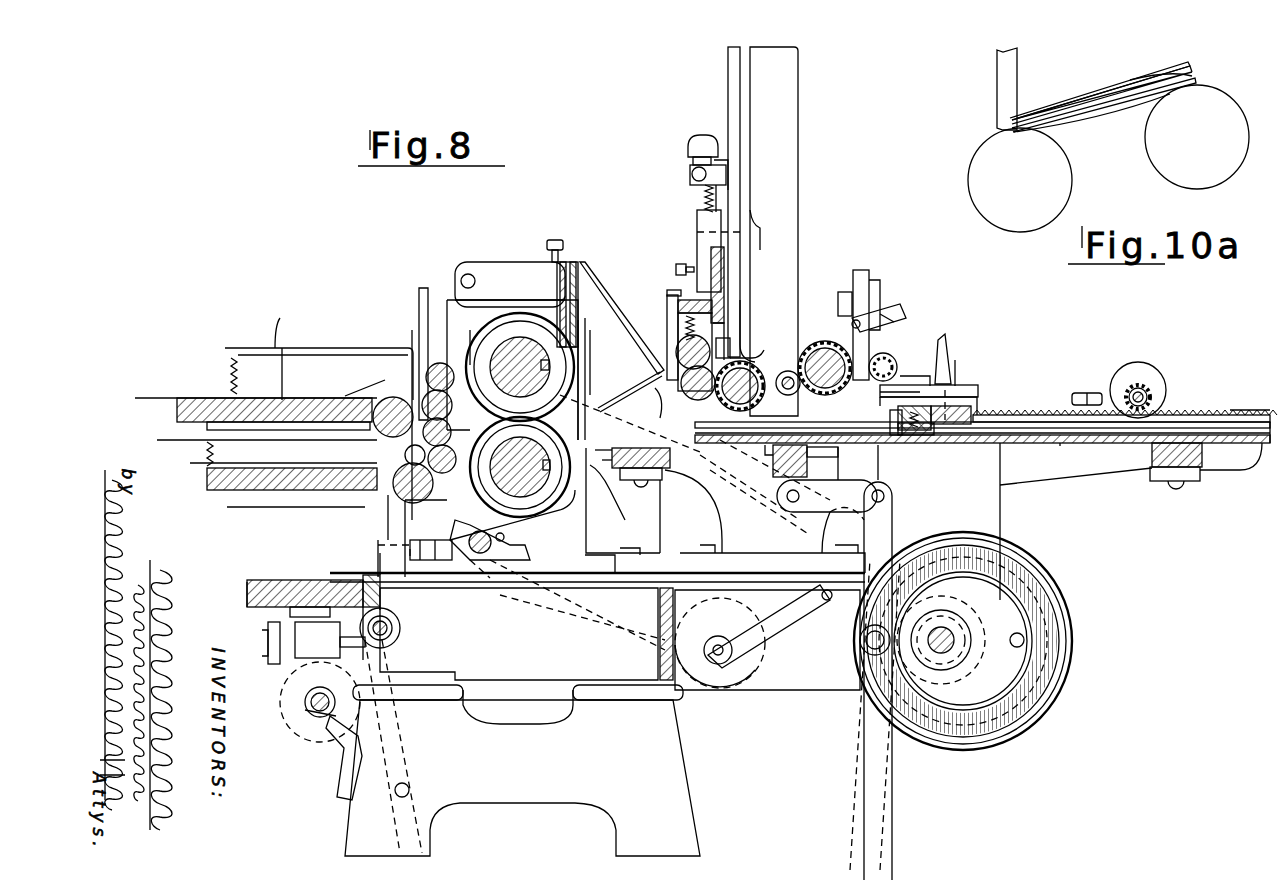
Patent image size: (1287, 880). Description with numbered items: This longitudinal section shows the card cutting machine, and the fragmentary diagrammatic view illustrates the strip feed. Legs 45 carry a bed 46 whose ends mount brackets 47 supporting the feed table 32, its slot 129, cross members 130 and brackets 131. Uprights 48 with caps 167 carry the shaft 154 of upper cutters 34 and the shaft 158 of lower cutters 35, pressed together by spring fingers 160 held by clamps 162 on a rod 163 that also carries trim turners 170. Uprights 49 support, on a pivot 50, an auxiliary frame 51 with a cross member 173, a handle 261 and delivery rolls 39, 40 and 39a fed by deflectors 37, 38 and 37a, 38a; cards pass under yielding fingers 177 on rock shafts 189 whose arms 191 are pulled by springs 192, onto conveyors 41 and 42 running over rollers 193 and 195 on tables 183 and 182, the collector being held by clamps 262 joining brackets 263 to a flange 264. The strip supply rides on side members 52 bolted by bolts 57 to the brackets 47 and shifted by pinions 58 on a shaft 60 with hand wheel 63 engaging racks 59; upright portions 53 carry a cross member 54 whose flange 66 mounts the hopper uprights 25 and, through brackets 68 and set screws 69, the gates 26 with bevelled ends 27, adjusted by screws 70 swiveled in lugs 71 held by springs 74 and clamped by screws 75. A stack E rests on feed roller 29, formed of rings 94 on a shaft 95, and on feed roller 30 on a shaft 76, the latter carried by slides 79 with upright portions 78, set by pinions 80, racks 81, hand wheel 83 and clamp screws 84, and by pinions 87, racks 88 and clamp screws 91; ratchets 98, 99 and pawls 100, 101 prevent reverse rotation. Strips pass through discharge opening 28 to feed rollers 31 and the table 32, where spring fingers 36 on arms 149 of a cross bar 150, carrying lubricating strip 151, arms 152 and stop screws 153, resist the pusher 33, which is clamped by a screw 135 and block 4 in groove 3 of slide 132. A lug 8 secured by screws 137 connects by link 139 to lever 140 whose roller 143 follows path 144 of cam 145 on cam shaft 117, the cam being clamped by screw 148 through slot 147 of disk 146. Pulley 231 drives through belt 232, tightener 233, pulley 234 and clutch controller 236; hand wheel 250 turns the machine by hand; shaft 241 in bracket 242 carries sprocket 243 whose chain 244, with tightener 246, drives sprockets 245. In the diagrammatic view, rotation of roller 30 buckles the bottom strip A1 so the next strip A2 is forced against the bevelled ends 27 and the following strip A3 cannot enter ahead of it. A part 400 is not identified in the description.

In FIG. 8, the undercut groove 3 is at (1262, 448).
In FIG. 8, the block 4 is at (935, 445).
In FIG. 8, the lug 8 is at (775, 485).
In FIG. 8, the end uprights 25 is at (797, 186).
In FIG. 8, the gates 26 is at (729, 112).
In FIG. 10a, the gates 26 is at (1000, 70).
In FIG. 10a, the bevelled lower ends 27 is at (1015, 120).
In FIG. 10a, the discharge opening 28 is at (1012, 130).
In FIG. 8, the feed roller 29 is at (818, 345).
In FIG. 10a, the feed roller 29 is at (971, 171).
In FIG. 8, the feed roller 30 is at (892, 352).
In FIG. 10a, the feed roller 30 is at (1238, 180).
In FIG. 8, the feed rollers 31 is at (700, 368).
In FIG. 8, the feed table 32 is at (602, 469).
In FIG. 8, the pusher 33 is at (968, 408).
In FIG. 8, the upper cutters 34 is at (570, 360).
In FIG. 8, the lower cutters 35 is at (613, 486).
In FIG. 8, the spring fingers 36 is at (575, 420).
In FIG. 8, the inner deflectors 37 is at (520, 367).
In FIG. 8, the inner deflectors 37a is at (500, 470).
In FIG. 8, the outer deflectors 38 is at (491, 434).
In FIG. 8, the outer deflectors 38a is at (520, 467).
In FIG. 8, the upper delivery roll 39 is at (437, 362).
In FIG. 8, the upper delivery roll 39a is at (380, 455).
In FIG. 8, the lower delivery roll 40 is at (380, 400).
In FIG. 8, the endless conveyor 41 is at (195, 404).
In FIG. 8, the endless conveyor 42 is at (205, 470).
In FIG. 8, the legs 45 is at (688, 782).
In FIG. 8, the bed 46 is at (545, 680).
In FIG. 8, the brackets 47 is at (1027, 478).
In FIG. 8, the uprights 48 is at (575, 395).
In FIG. 8, the uprights 49 is at (385, 548).
In FIG. 8, the pivot 50 is at (380, 490).
In FIG. 8, the auxiliary frame 51 is at (422, 385).
In FIG. 8, the side members 52 is at (1020, 408).
In FIG. 8, the upright portions 53 is at (675, 408).
In FIG. 8, the cross member 54 is at (680, 307).
In FIG. 8, the bolts 57 is at (1088, 392).
In FIG. 8, the pinions 58 is at (1150, 384).
In FIG. 8, the racks 59 is at (1236, 412).
In FIG. 8, the shaft 60 is at (1146, 396).
In FIG. 8, the hand wheel 63 is at (1138, 362).
In FIG. 8, the upstanding flange 66 is at (725, 268).
In FIG. 8, the bifurcated brackets 68 is at (712, 222).
In FIG. 8, the set screws 69 is at (681, 262).
In FIG. 8, the adjusting screws 70 is at (690, 145).
In FIG. 8, the lugs 71 is at (722, 170).
In FIG. 8, the springs 74 is at (705, 195).
In FIG. 8, the clamping screws 75 is at (693, 172).
In FIG. 8, the shaft 76 is at (898, 370).
In FIG. 8, the upright portions 78 is at (872, 284).
In FIG. 8, the slides 79 is at (965, 390).
In FIG. 8, the pinions 80 is at (935, 345).
In FIG. 8, the racks 81 is at (878, 300).
In FIG. 8, the hand wheel 83 is at (925, 375).
In FIG. 8, the clamp screws 84 is at (888, 318).
In FIG. 8, the pinions 87 is at (768, 370).
In FIG. 8, the racks 88 is at (785, 395).
In FIG. 8, the clamp screws 91 is at (958, 380).
In FIG. 8, the rings 94 is at (745, 410).
In FIG. 8, the shaft 95 is at (728, 412).
In FIG. 8, the ratchet 98 is at (857, 320).
In FIG. 8, the ratchet 99 is at (740, 350).
In FIG. 8, the holding pawl 100 is at (843, 295).
In FIG. 8, the holding pawl 101 is at (748, 340).
In FIG. 8, the cam shaft 117 is at (942, 655).
In FIG. 8, the slot 129 is at (636, 485).
In FIG. 8, the cross members 130 is at (1200, 480).
In FIG. 8, the brackets 131 is at (1180, 485).
In FIG. 8, the slide 132 is at (1075, 445).
In FIG. 8, the screw 135 is at (915, 445).
In FIG. 8, the screws 137 is at (822, 458).
In FIG. 8, the link 139 is at (810, 500).
In FIG. 8, the lever 140 is at (880, 797).
In FIG. 8, the cam roller 143 is at (870, 655).
In FIG. 8, the cam path 144 is at (1050, 635).
In FIG. 8, the cam 145 is at (1060, 620).
In FIG. 8, the disk 146 is at (905, 750).
In FIG. 8, the arcuate slot 147 is at (1040, 600).
In FIG. 8, the screw 148 is at (1025, 640).
In FIG. 8, the arms 149 is at (618, 320).
In FIG. 8, the cross bar 150 is at (572, 268).
In FIG. 8, the lubricating strip 151 is at (578, 292).
In FIG. 8, the arms 152 is at (514, 260).
In FIG. 8, the stop screws 153 is at (555, 245).
In FIG. 8, the shaft 154 is at (515, 335).
In FIG. 8, the shaft 158 is at (520, 560).
In FIG. 8, the spring fingers 160 is at (545, 510).
In FIG. 8, the clamps 162 is at (478, 575).
In FIG. 8, the rod 163 is at (500, 575).
In FIG. 8, the caps 167 is at (452, 305).
In FIG. 8, the trim turners 170 is at (445, 560).
In FIG. 8, the cross member 173 is at (470, 380).
In FIG. 8, the yielding fingers 177 is at (380, 400).
In FIG. 8, the table 182 is at (210, 490).
In FIG. 8, the table 183 is at (175, 398).
In FIG. 8, the rock shafts 189 is at (440, 420).
In FIG. 8, the arms 191 is at (280, 348).
In FIG. 8, the springs 192 is at (228, 385).
In FIG. 8, the roller 193 is at (410, 420).
In FIG. 8, the roller 195 is at (370, 495).
In FIG. 8, the pulley 231 is at (580, 590).
In FIG. 8, the belt 232 is at (725, 688).
In FIG. 8, the belt tightener 233 is at (718, 695).
In FIG. 8, the pulley 234 is at (900, 610).
In FIG. 8, the clutch controller 236 is at (950, 370).
In FIG. 8, the shaft 241 is at (318, 712).
In FIG. 8, the bracket 242 is at (343, 775).
In FIG. 8, the sprocket 243 is at (285, 694).
In FIG. 8, the chain 244 is at (300, 580).
In FIG. 8, the sprockets 245 is at (420, 400).
In FIG. 8, the chain tightener 246 is at (400, 640).
In FIG. 8, the hand wheel 250 is at (625, 520).
In FIG. 8, the handle 261 is at (410, 330).
In FIG. 8, the clamps 262 is at (280, 642).
In FIG. 8, the brackets 263 is at (250, 590).
In FIG. 8, the flange 264 is at (320, 690).
In FIG. 8, the block 400 is at (415, 500).
In FIG. 10a, the stack E is at (1066, 100).
In FIG. 10a, the bottom strip A1 is at (1100, 118).
In FIG. 10a, the next adjacent strip A2 is at (1215, 80).
In FIG. 10a, the next strip above A3 is at (1112, 96).